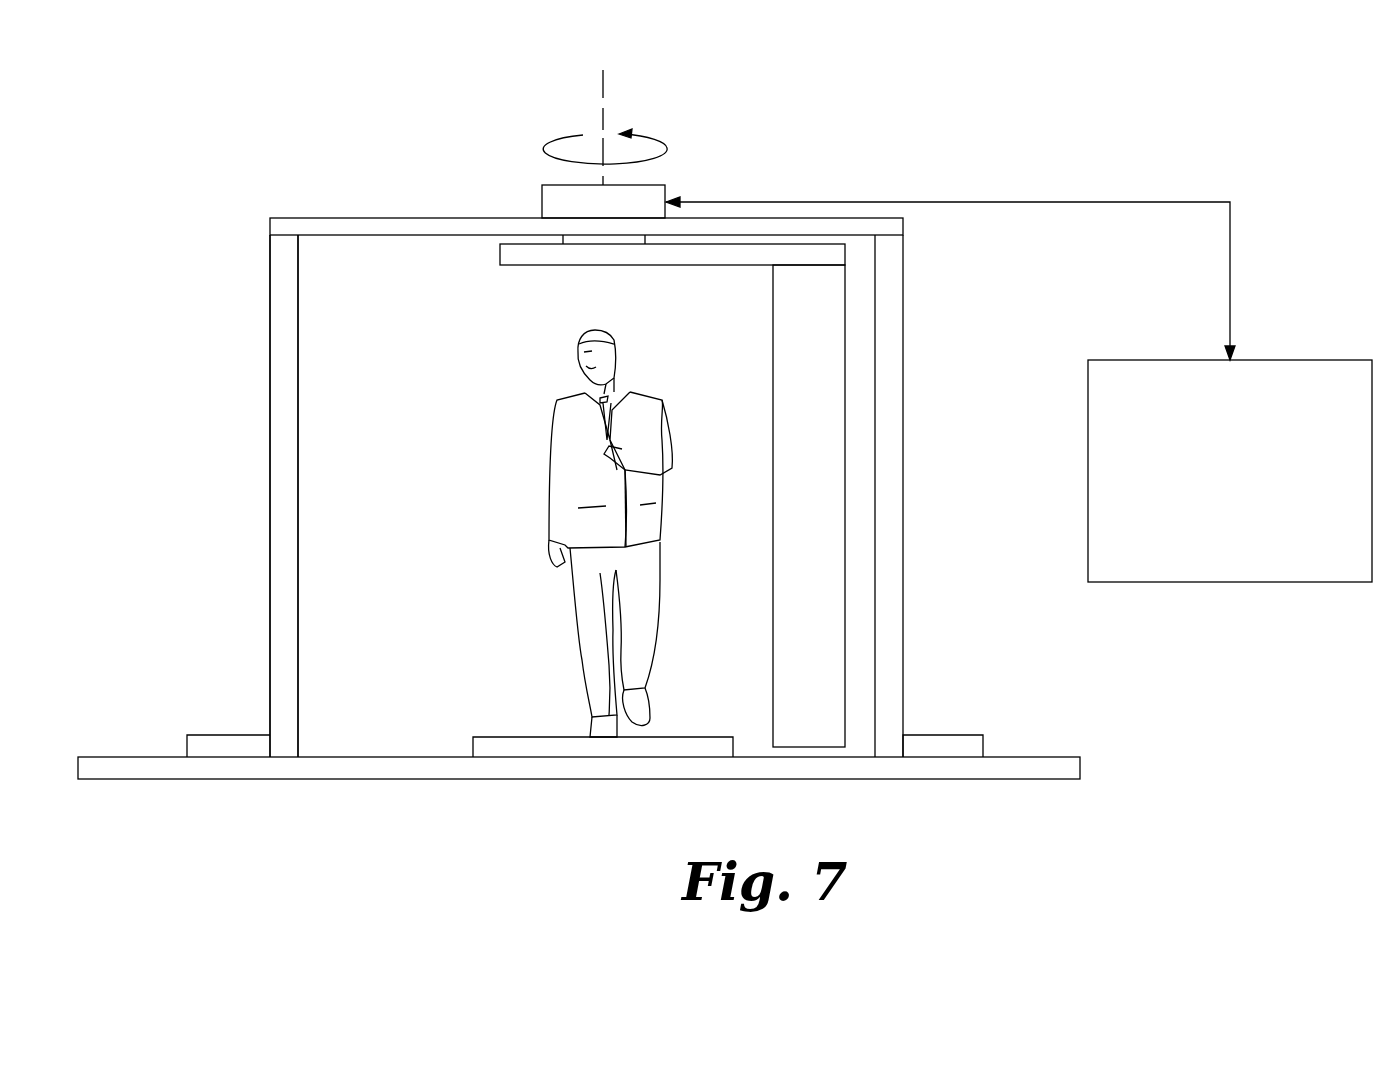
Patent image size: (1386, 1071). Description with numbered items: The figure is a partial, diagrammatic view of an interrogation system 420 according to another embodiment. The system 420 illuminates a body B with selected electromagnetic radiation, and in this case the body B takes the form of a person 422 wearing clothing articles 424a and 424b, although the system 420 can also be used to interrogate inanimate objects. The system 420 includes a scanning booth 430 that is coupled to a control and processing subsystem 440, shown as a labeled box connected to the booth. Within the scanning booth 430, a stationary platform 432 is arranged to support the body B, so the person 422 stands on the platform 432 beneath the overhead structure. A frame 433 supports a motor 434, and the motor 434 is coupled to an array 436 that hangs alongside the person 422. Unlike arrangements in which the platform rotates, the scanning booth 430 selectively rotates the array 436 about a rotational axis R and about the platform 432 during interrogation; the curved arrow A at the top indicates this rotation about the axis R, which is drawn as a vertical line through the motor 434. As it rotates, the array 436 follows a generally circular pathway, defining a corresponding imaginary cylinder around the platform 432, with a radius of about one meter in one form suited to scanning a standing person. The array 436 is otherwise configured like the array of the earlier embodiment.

The interrogation system 420 is at (1142, 107).
The person 422 is at (573, 533).
The clothing article 424a is at (550, 472).
The clothing article 424b is at (580, 628).
The scanning booth 430 is at (237, 378).
The stationary platform 432 is at (473, 745).
The frame 433 is at (270, 565).
The motor 434 is at (542, 200).
The array 436 is at (845, 500).
The control and processing subsystem 440 is at (1277, 360).
The rotational axis R is at (603, 88).
The direction of rotation A is at (660, 146).
The body B is at (655, 520).